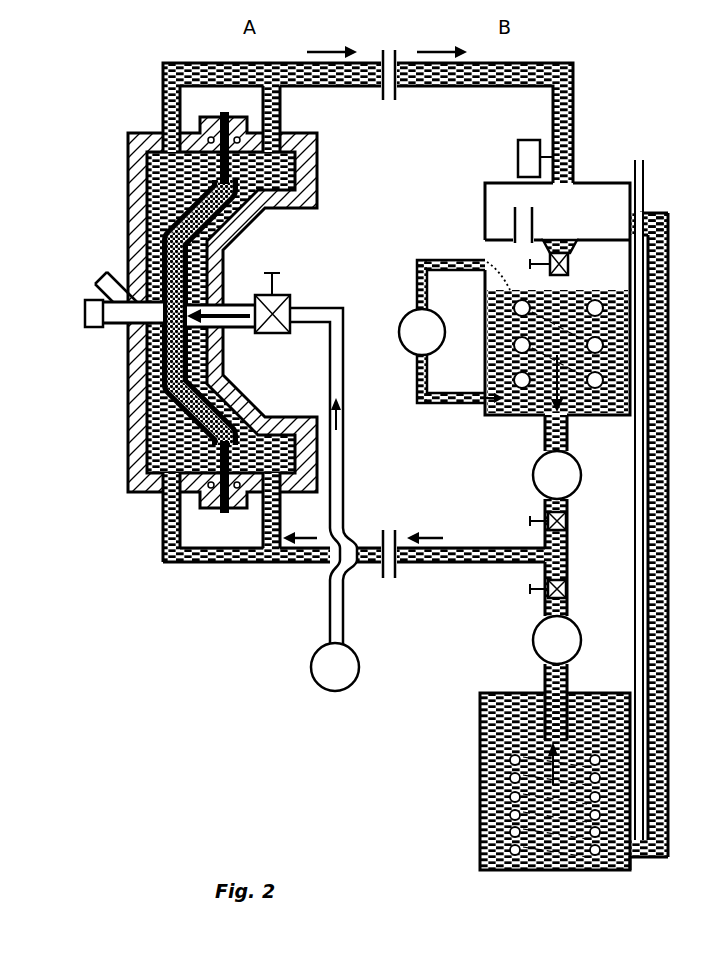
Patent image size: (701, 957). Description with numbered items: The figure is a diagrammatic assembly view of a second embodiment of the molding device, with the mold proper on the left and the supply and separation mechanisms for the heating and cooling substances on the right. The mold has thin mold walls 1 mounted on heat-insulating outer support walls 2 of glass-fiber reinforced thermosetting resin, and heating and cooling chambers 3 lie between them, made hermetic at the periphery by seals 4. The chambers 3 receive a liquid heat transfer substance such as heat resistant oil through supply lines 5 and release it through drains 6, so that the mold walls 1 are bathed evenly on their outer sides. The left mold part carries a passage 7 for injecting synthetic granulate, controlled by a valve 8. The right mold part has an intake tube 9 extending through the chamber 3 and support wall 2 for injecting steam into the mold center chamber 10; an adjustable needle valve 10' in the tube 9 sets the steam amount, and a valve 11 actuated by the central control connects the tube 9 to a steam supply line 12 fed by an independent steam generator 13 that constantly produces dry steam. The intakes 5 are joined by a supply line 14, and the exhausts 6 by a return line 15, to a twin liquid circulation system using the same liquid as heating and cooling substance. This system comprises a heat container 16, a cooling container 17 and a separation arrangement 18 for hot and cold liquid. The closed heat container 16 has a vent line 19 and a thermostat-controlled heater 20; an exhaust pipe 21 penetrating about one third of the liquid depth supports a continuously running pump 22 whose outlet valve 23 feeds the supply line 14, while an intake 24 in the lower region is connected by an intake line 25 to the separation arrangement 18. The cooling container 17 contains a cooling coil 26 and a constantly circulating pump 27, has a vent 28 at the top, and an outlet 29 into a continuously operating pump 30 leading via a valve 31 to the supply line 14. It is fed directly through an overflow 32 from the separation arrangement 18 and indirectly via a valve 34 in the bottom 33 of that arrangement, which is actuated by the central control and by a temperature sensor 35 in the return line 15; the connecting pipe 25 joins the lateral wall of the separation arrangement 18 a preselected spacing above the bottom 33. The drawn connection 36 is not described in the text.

The mold walls 1 is at (193, 190).
The outer support walls 2 is at (128, 190).
The heating and cooling chambers 3 is at (146, 240).
The seals 4 is at (234, 134).
The supply lines 5 is at (172, 487).
The drains 6 is at (173, 103).
The passage 7 is at (120, 320).
The valve 8 is at (90, 322).
The intake tube 9 is at (248, 329).
The mold center chamber 10 is at (152, 312).
The adjustable needle valve 10' is at (223, 291).
The valve 11 is at (284, 310).
The steam supply line 12 is at (346, 469).
The steam generator 13 is at (330, 670).
The supply line 14 is at (250, 556).
The return line 15 is at (184, 70).
The heat container 16 is at (497, 721).
The cooling container 17 is at (533, 400).
The separation arrangement 18 is at (502, 188).
The vent line 19 is at (637, 633).
The heater 20 is at (512, 813).
The exhaust pipe 21 is at (546, 684).
The pump 22 is at (535, 639).
The valve 23 is at (567, 589).
The intake 24 is at (639, 850).
The intake line 25 is at (656, 498).
The cooling coil 26 is at (515, 377).
The pump 27 is at (409, 317).
The vent 28 is at (485, 250).
The outlet 29 is at (568, 428).
The pump 30 is at (538, 478).
The valve 31 is at (566, 524).
The overflow 32 is at (518, 220).
The bottom 33 is at (582, 238).
The valve 34 is at (569, 266).
The temperature sensor 35 is at (528, 146).
The overflow connection 36 is at (625, 233).